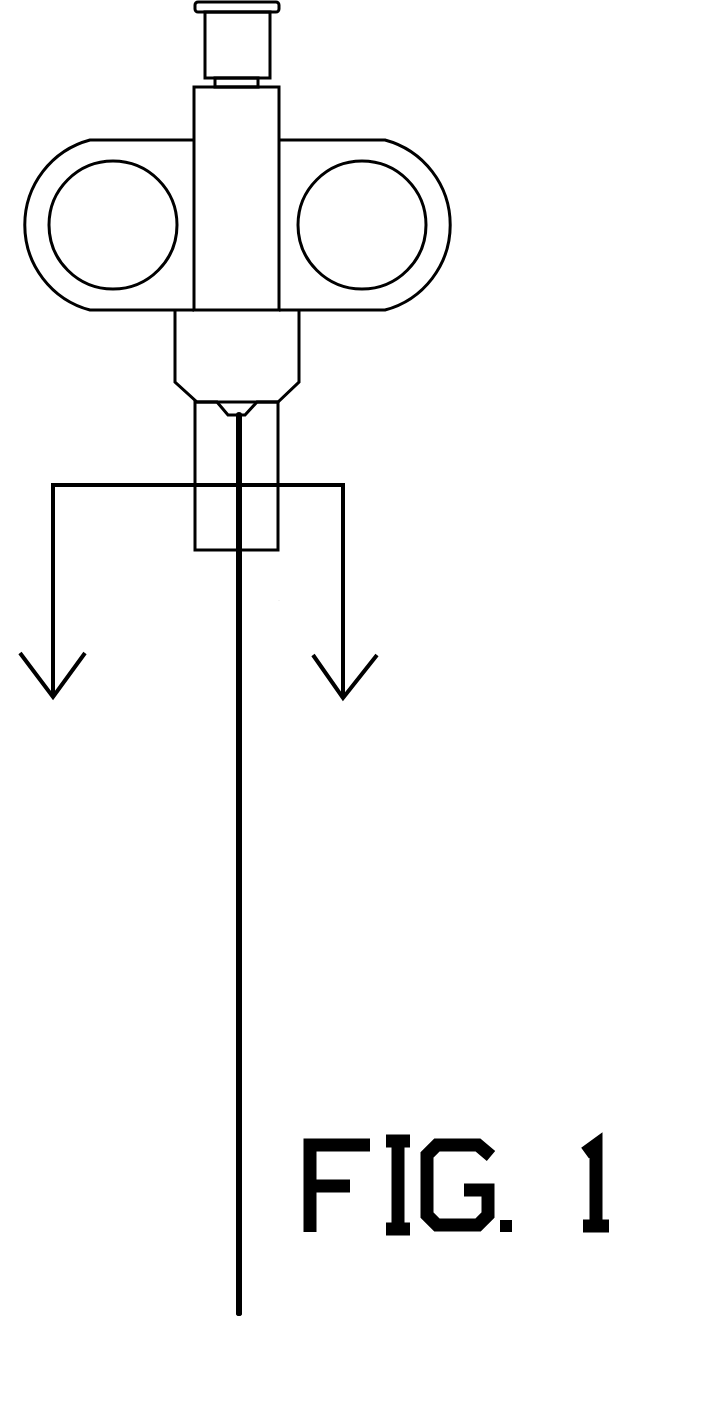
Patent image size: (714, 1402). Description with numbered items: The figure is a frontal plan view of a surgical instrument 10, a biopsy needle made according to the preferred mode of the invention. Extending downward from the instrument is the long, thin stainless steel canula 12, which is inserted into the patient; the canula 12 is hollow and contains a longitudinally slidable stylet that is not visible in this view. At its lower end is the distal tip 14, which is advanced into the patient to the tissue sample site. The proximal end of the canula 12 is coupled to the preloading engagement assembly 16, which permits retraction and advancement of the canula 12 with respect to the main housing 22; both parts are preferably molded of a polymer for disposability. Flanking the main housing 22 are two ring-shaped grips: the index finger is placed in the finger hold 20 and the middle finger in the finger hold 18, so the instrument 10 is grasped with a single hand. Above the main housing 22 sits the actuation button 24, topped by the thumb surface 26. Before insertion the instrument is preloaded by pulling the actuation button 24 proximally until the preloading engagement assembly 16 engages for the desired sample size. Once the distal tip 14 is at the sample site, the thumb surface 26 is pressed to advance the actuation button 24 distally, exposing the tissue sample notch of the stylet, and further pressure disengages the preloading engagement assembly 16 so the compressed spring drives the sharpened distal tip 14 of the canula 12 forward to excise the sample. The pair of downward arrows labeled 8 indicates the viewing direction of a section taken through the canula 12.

The section view direction arrows (FIG. 8) 8 is at (198, 628).
The surgical instrument 10 is at (382, 612).
The canula 12 is at (242, 833).
The distal tip 14 is at (210, 1278).
The preloading engagement assembly 16 is at (265, 450).
The finger hold 18 is at (117, 151).
The finger hold 20 is at (365, 302).
The main housing 22 is at (265, 130).
The actuation button 24 is at (255, 42).
The thumb surface 26 is at (270, 10).